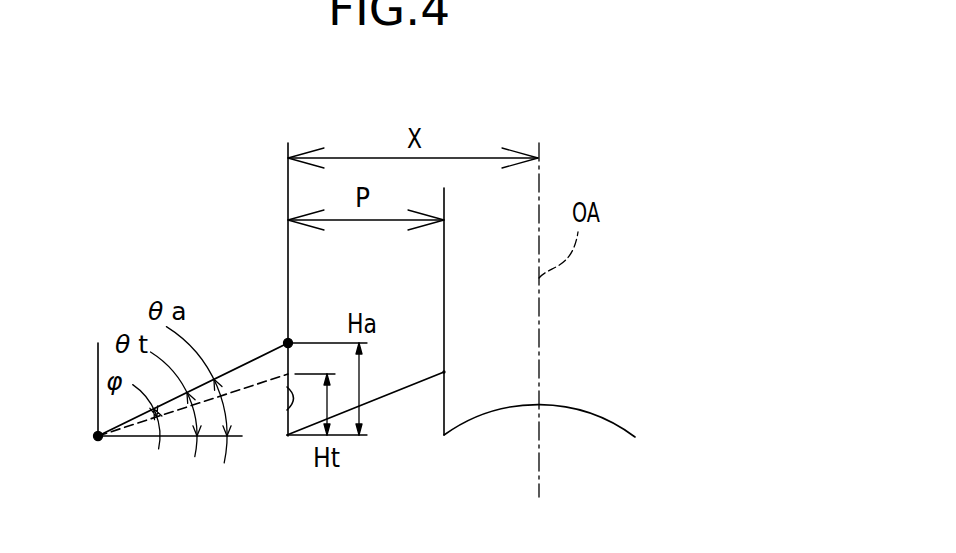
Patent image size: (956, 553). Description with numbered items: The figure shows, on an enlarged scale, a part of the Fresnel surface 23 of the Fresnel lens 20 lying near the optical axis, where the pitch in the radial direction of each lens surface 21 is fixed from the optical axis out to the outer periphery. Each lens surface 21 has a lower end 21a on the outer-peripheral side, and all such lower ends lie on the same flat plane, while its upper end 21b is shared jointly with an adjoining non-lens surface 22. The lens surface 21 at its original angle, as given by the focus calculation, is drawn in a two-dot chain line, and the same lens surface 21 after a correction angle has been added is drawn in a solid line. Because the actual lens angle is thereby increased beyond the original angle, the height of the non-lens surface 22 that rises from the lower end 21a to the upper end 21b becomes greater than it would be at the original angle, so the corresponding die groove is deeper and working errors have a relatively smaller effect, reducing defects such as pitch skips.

The Fresnel lens 20 is at (128, 158).
The lens surface 21 is at (242, 360).
The lower end of lens surface 21a is at (97, 445).
The upper end 21b is at (287, 342).
The non-lens surface 22 is at (288, 412).
The Fresnel surface 23 is at (163, 268).